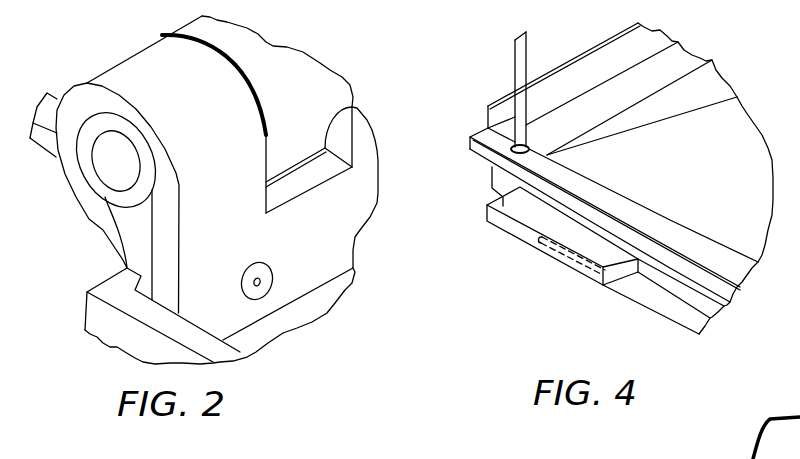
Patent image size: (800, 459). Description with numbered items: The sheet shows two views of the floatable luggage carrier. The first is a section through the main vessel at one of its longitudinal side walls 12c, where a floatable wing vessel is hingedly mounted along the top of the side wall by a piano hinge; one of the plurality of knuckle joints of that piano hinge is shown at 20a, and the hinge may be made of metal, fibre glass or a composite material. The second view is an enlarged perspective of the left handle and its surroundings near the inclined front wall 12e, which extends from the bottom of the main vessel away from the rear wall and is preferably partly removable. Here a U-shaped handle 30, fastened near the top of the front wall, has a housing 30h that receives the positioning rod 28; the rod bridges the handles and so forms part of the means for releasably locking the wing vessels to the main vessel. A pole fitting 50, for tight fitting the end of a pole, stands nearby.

In FIG. 2, the knuckle joint 20a is at (258, 92).
In FIG. 4, the longitudinal side wall 12c is at (718, 104).
In FIG. 4, the inclined front wall 12e is at (728, 199).
In FIG. 4, the pole socket 50 is at (478, 112).
In FIG. 4, the U-shaped handle 30 is at (537, 226).
In FIG. 4, the housing 30h is at (537, 285).
In FIG. 4, the positioning rod 28 is at (637, 308).